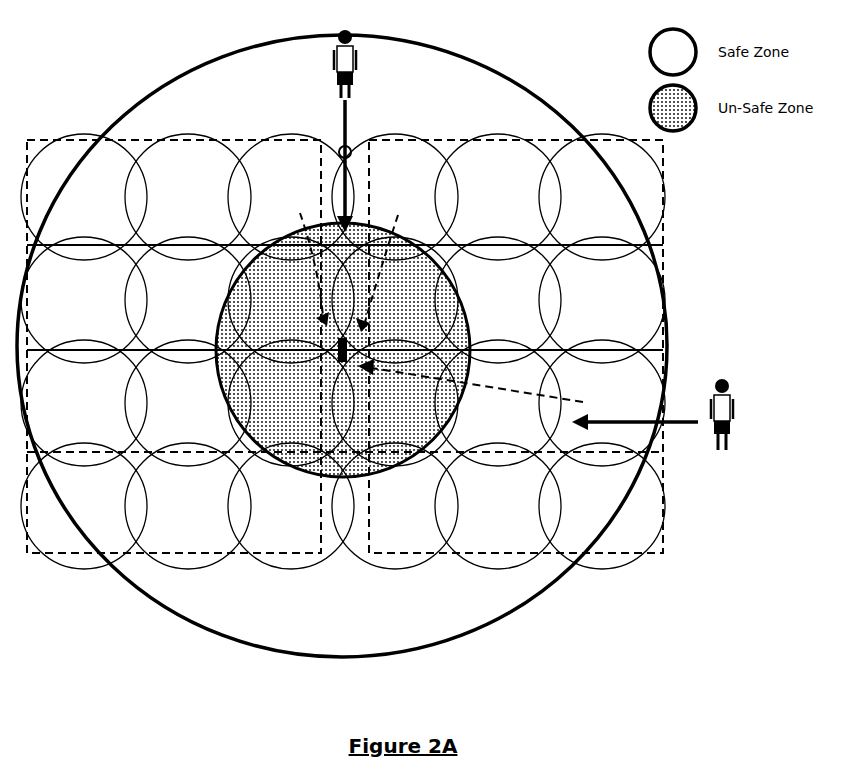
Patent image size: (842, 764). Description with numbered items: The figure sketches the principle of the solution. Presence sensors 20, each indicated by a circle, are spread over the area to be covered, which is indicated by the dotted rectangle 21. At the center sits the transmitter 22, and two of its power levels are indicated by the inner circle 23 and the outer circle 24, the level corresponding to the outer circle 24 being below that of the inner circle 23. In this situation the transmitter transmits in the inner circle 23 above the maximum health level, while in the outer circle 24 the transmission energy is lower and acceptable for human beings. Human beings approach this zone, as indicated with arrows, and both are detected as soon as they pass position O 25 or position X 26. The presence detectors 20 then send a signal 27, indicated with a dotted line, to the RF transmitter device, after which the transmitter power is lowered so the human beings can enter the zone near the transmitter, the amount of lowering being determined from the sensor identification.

The sensor 20 is at (343, 351).
The dotted rectangle 21 is at (97, 133).
The transmitter 22 is at (347, 362).
The inner circle 23 is at (270, 422).
The outer circle 24 is at (288, 598).
The position O 25 is at (340, 148).
The position X 26 is at (638, 428).
The signal 27 is at (305, 257).